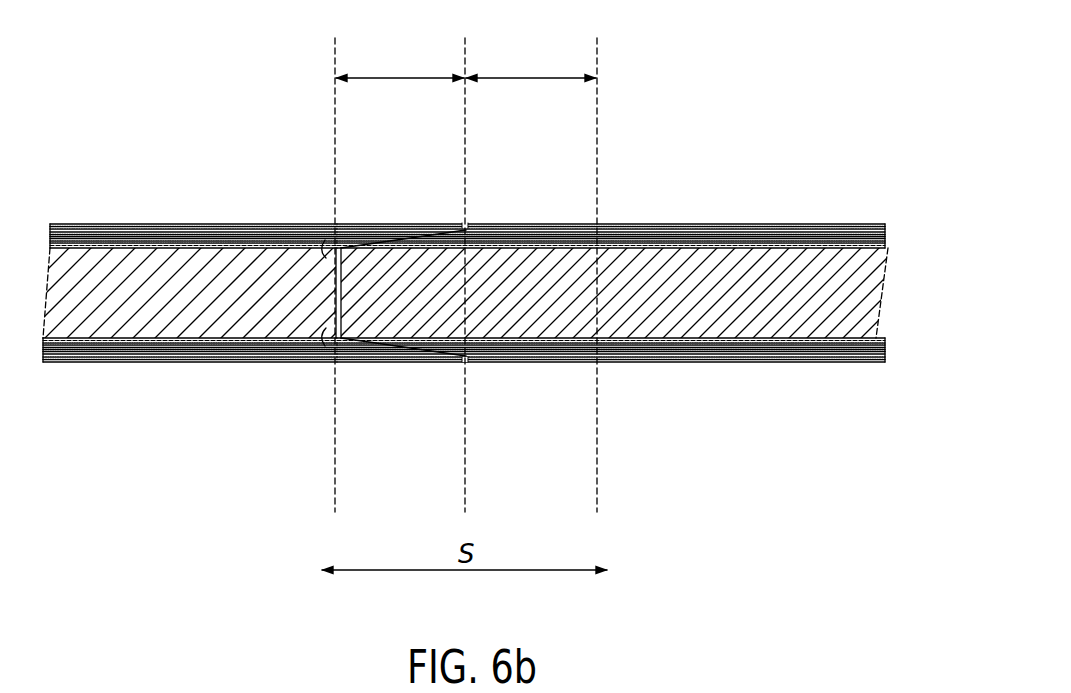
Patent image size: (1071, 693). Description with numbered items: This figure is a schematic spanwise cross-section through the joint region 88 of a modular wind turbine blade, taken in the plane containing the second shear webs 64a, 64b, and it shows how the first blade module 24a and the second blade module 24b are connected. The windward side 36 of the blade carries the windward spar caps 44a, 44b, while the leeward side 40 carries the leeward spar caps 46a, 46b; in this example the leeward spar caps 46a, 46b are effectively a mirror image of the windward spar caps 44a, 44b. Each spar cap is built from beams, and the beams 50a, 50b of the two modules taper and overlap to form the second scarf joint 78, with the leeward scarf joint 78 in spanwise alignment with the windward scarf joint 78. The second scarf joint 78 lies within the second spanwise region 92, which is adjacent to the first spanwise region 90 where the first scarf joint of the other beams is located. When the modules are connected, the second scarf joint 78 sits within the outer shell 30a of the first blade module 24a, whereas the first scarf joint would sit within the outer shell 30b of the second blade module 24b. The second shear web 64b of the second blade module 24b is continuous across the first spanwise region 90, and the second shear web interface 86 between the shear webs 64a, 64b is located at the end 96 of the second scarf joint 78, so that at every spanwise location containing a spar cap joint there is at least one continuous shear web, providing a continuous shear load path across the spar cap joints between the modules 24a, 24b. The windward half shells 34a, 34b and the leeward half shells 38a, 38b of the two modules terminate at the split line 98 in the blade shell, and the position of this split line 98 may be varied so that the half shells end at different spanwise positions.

The first blade module 24a is at (128, 118).
The second blade module 24b is at (857, 132).
The leeward spar cap of the first blade module 46a is at (88, 238).
The second shear web of the first blade module 64a is at (150, 272).
The leeward half shell of the first blade module 38a is at (195, 224).
The beam of the spar cap of the first blade module 50a is at (224, 240).
The outer shell of the first blade module 30a is at (268, 228).
The end of the second scarf joint 96 is at (337, 252).
The second scarf joint 78 is at (395, 240).
The second shear web interface 86 is at (345, 292).
The split line 98 is at (466, 224).
The leeward side 40 is at (525, 200).
The beam of the spar cap of the second blade module 50b is at (597, 226).
The leeward spar cap of the second blade module 46b is at (687, 232).
The second shear web of the second blade module 64b is at (720, 276).
The leeward half shell of the second blade module 38b is at (765, 223).
The outer shell of the second blade module 30b is at (822, 228).
The windward spar cap of the first blade module 44a is at (107, 362).
The windward half shell of the first blade module 34a is at (165, 366).
The windward side 36 is at (505, 382).
The windward half shell of the second blade module 34b is at (690, 368).
The windward spar cap of the second blade module 44b is at (830, 352).
The joint region 88 is at (362, 118).
The second spanwise region 92 is at (402, 75).
The first spanwise region 90 is at (531, 75).